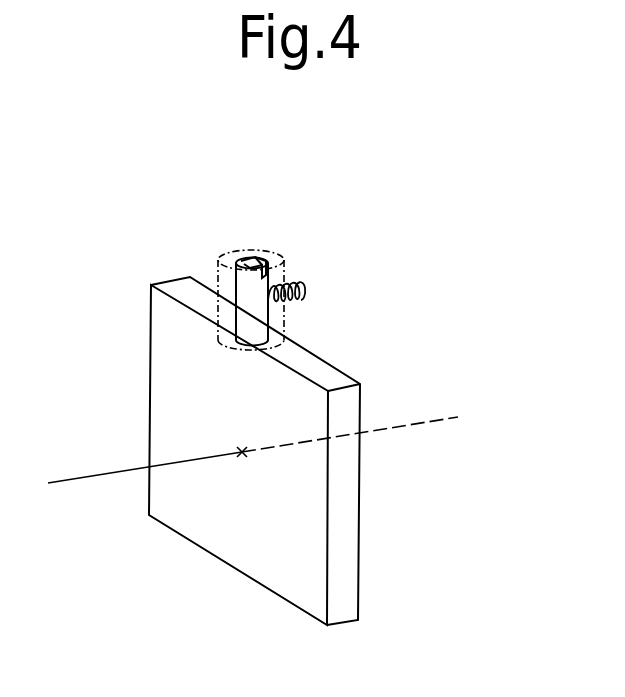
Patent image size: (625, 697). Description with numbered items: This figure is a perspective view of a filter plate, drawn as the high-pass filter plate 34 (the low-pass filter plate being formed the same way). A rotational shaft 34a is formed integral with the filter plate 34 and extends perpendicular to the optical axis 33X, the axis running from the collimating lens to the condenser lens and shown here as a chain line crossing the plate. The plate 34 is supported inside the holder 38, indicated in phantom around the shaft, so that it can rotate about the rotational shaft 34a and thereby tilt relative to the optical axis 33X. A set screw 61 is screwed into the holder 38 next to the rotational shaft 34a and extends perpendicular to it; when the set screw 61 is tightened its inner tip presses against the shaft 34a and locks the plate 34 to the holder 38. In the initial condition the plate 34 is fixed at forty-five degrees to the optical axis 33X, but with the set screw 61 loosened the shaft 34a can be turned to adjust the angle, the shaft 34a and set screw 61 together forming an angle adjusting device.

The high-pass filter plate 34 is at (343, 383).
The rotational shaft 34a is at (240, 310).
The holder 38 is at (253, 250).
The set screw 61 is at (305, 296).
The optical axis 33X is at (118, 475).